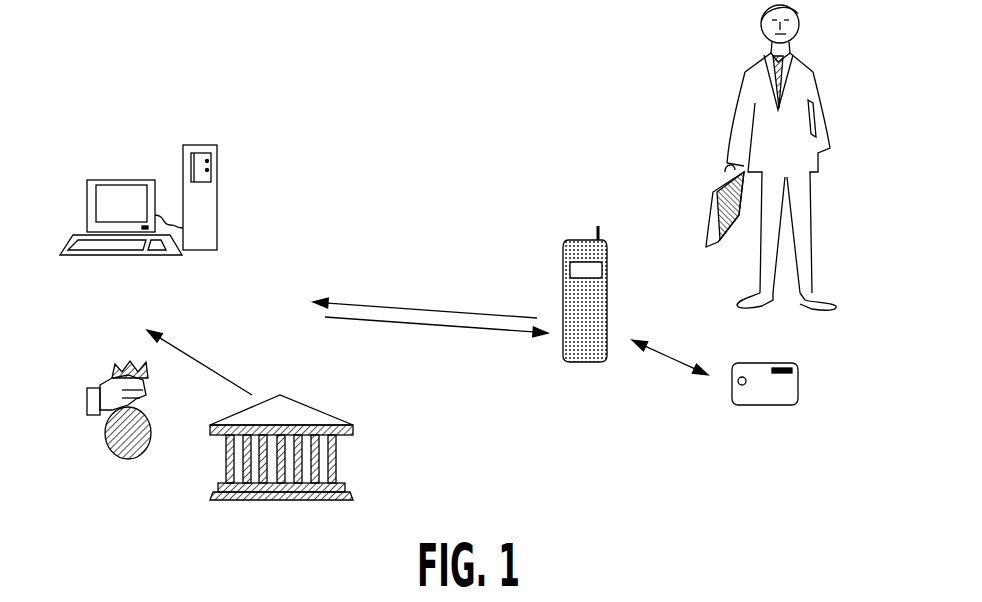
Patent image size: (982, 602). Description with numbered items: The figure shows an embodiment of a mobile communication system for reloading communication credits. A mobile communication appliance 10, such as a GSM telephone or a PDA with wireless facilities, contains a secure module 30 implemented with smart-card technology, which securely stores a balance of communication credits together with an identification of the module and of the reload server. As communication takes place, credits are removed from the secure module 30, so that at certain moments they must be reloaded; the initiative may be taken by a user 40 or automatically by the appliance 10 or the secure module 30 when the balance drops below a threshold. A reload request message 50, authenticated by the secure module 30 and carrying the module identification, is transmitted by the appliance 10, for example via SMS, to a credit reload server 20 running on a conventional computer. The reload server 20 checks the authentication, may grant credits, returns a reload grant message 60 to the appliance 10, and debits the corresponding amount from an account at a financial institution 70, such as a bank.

The mobile communication appliance 10 is at (573, 240).
The credit reload server 20 is at (220, 197).
The secure module 30 is at (760, 407).
The user 40 is at (818, 197).
The reload request message 50 is at (428, 308).
The reload grant message 60 is at (407, 339).
The financial institution 70 is at (338, 458).